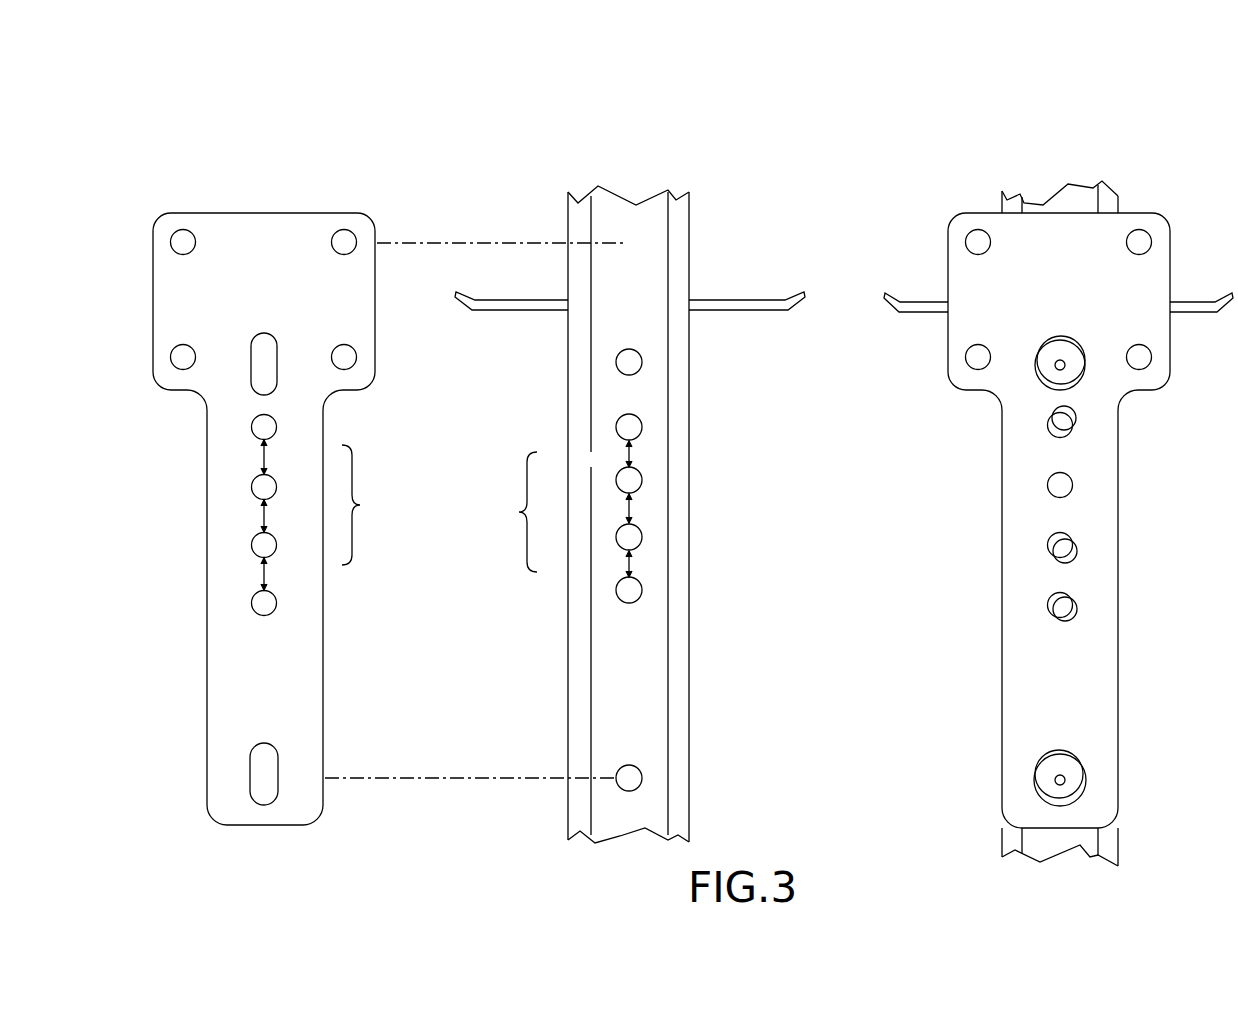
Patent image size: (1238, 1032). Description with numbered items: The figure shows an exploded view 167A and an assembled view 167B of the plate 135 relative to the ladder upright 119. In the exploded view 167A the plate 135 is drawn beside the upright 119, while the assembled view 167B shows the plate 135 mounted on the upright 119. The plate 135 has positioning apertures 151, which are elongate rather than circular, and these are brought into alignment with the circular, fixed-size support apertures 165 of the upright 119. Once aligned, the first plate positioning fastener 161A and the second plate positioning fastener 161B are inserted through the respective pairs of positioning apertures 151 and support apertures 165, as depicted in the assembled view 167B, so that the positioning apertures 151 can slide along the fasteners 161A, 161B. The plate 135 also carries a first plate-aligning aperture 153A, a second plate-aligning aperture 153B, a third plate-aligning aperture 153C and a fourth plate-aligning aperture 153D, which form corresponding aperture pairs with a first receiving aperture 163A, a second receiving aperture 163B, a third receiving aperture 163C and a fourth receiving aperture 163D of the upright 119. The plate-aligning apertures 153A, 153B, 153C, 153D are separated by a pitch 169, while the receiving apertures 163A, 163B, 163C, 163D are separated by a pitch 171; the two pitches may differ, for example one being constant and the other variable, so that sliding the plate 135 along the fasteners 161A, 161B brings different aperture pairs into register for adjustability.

The ladder upright 119 is at (583, 212).
The plate 135 is at (267, 213).
The positioning apertures 151 is at (260, 338).
The first plate-aligning aperture 153A is at (253, 432).
The second plate-aligning aperture 153B is at (253, 490).
The third plate-aligning aperture 153C is at (253, 549).
The fourth plate-aligning aperture 153D is at (257, 610).
The first plate positioning fastener 161A is at (1072, 353).
The second plate positioning fastener 161B is at (1082, 772).
The first receiving aperture 163A is at (642, 423).
The second receiving aperture 163B is at (642, 480).
The third receiving aperture 163C is at (642, 538).
The fourth receiving aperture 163D is at (642, 595).
The support apertures 165 is at (642, 362).
The exploded view 167A is at (200, 142).
The assembled view 167B is at (1015, 118).
The pitch 169 is at (375, 505).
The pitch 171 is at (506, 512).